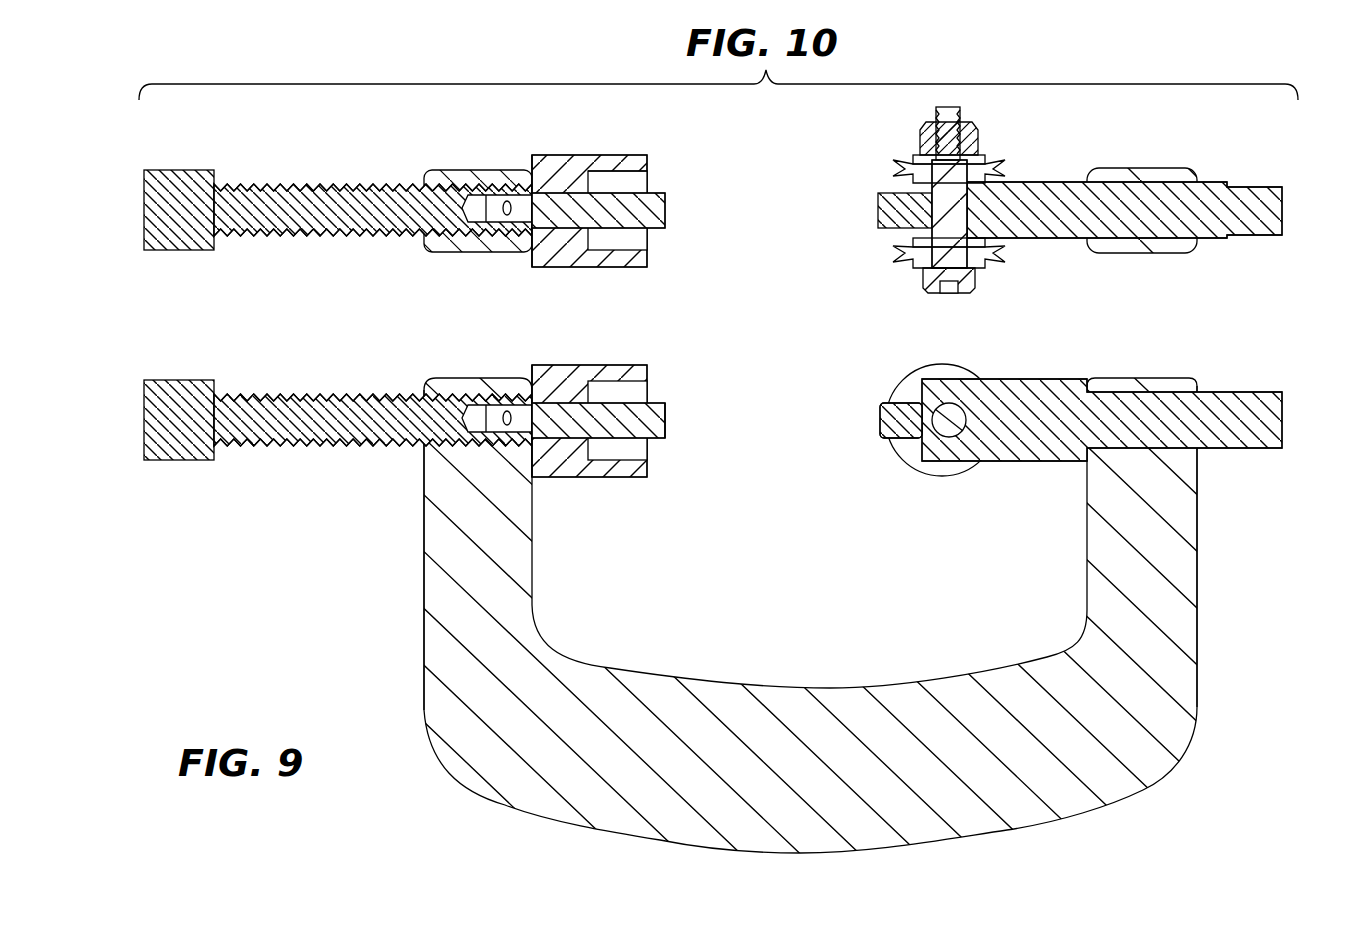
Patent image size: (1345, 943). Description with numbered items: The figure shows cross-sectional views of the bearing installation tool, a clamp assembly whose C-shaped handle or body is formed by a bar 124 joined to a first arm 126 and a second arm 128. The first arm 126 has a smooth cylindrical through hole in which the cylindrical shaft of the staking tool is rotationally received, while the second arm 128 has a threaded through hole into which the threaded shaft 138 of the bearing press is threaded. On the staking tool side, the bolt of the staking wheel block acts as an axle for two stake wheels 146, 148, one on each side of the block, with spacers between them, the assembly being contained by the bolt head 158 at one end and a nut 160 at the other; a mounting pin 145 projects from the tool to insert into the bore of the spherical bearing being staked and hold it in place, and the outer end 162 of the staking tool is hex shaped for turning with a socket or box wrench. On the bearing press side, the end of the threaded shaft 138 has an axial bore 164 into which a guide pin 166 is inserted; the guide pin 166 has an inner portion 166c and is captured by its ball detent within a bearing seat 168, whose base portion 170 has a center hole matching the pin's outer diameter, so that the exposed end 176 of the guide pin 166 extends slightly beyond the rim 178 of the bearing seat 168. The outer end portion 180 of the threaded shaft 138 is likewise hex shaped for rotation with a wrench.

In FIG. 9, the bar 124 is at (724, 690).
In FIG. 10, the first arm 126 is at (1140, 168).
In FIG. 9, the first arm 126 is at (1185, 500).
In FIG. 9, the second arm 128 is at (445, 520).
In FIG. 10, the threaded shaft 138 is at (385, 184).
In FIG. 9, the threaded shaft 138 is at (373, 420).
In FIG. 10, the mounting pin 145 is at (905, 210).
In FIG. 9, the mounting pin 145 is at (880, 415).
In FIG. 10, the stake wheel 146 is at (1005, 258).
In FIG. 9, the stake wheel 146 is at (950, 366).
In FIG. 10, the stake wheel 148 is at (1003, 168).
In FIG. 10, the bolt head 158 is at (975, 298).
In FIG. 10, the nut 160 is at (975, 140).
In FIG. 10, the outer end 162 is at (1245, 186).
In FIG. 9, the outer end 162 is at (1245, 392).
In FIG. 10, the axial bore 164 is at (458, 196).
In FIG. 10, the guide pin 166 is at (655, 205).
In FIG. 9, the guide pin 166 is at (645, 396).
In FIG. 10, the inner portion 166c is at (516, 224).
In FIG. 9, the inner portion 166c is at (497, 418).
In FIG. 10, the bearing seat 168 is at (597, 155).
In FIG. 9, the bearing seat 168 is at (597, 365).
In FIG. 10, the base portion 170 is at (532, 160).
In FIG. 9, the base portion 170 is at (532, 370).
In FIG. 9, the exposed end 176 is at (668, 420).
In FIG. 10, the rim 178 is at (650, 165).
In FIG. 10, the outer end portion 180 is at (175, 170).
In FIG. 9, the outer end portion 180 is at (175, 382).